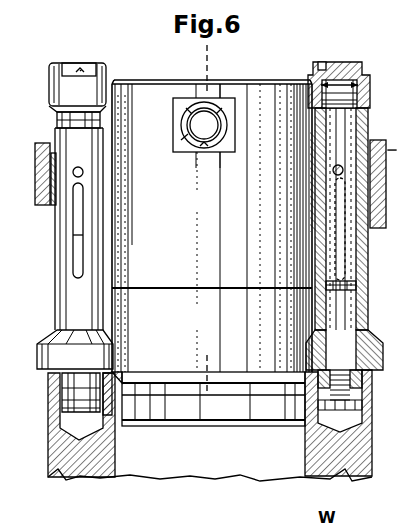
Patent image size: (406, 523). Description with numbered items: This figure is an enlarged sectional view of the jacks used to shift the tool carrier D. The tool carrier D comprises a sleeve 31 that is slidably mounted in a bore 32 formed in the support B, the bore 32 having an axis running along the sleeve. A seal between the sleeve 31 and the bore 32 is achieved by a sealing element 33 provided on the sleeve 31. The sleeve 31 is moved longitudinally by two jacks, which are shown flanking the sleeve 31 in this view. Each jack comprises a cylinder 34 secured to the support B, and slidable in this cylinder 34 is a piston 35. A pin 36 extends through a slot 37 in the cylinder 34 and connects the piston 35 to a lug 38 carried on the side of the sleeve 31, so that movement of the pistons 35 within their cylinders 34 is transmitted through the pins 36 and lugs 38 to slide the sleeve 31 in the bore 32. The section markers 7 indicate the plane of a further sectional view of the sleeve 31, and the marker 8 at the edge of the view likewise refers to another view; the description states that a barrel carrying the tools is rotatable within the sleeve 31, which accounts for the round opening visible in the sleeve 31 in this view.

The section line 7- 7 is at (203, 72).
The adjacent component (partial) 8 is at (397, 166).
The sleeve 31 is at (231, 318).
The bore 32 is at (118, 444).
The sealing element 33 is at (118, 384).
The cylinder 34 is at (72, 291).
The piston 35 is at (345, 284).
The pin 36 is at (70, 160).
The slot 37 is at (78, 258).
The lug 38 is at (119, 192).
The tool carrier D is at (231, 200).
The support B is at (62, 470).